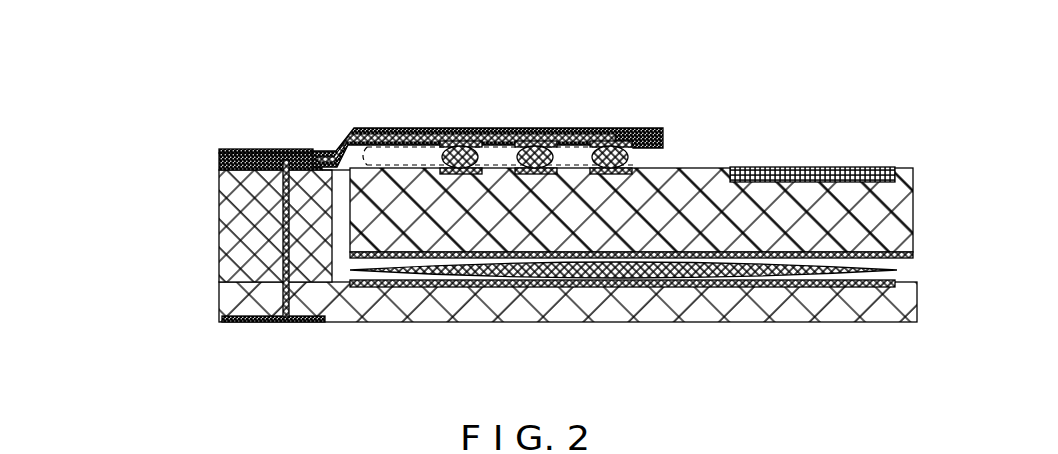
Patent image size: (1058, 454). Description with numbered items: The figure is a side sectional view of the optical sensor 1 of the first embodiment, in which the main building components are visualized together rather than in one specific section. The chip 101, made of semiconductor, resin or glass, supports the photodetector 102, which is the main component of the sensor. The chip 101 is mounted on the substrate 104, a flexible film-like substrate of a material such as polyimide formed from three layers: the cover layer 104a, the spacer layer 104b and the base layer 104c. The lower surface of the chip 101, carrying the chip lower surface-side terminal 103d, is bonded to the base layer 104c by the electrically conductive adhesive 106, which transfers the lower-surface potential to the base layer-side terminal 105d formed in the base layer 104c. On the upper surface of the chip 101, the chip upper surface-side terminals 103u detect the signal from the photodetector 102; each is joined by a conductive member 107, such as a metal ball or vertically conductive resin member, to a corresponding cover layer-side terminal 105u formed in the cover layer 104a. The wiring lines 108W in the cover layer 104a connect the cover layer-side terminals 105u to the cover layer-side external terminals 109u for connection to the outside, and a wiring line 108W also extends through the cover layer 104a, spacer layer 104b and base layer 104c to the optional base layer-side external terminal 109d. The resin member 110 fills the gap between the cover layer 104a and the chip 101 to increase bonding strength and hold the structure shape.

The optical sensor 1 is at (174, 118).
The chip 101 is at (392, 240).
The photodetector 102 is at (772, 167).
The chip upper surface-side terminal 103u is at (470, 175).
The chip lower surface-side terminal 103d is at (700, 252).
The substrate 104 is at (143, 145).
The cover layer 104a is at (227, 160).
The spacer layer 104b is at (227, 214).
The base layer 104c is at (531, 329).
The cover layer-side terminal 105u is at (460, 146).
The base layer-side terminal 105d is at (863, 300).
The adhesive 106 is at (680, 277).
The conductive member 107 is at (448, 141).
The wiring line 108W is at (362, 128).
The cover layer-side external terminal 109u is at (248, 149).
The base layer-side external terminal 109d is at (252, 322).
The resin member 110 is at (398, 127).